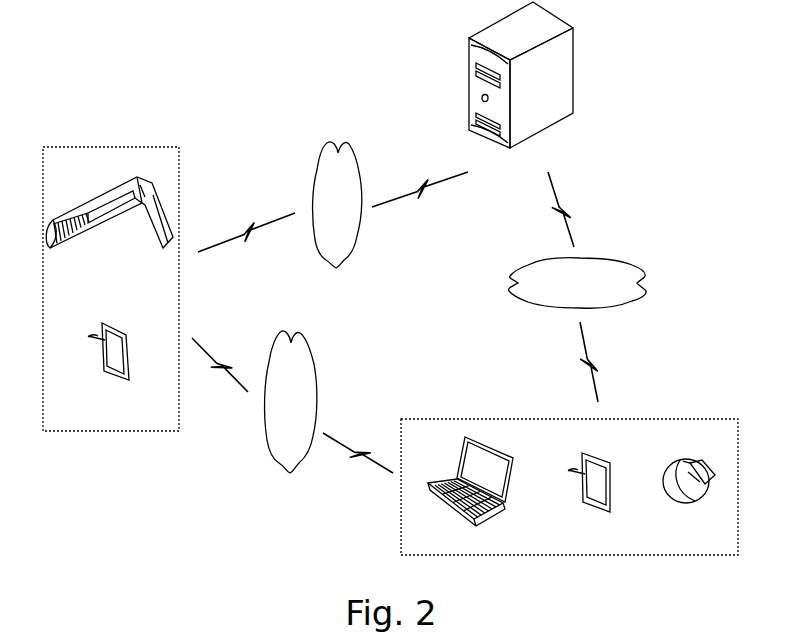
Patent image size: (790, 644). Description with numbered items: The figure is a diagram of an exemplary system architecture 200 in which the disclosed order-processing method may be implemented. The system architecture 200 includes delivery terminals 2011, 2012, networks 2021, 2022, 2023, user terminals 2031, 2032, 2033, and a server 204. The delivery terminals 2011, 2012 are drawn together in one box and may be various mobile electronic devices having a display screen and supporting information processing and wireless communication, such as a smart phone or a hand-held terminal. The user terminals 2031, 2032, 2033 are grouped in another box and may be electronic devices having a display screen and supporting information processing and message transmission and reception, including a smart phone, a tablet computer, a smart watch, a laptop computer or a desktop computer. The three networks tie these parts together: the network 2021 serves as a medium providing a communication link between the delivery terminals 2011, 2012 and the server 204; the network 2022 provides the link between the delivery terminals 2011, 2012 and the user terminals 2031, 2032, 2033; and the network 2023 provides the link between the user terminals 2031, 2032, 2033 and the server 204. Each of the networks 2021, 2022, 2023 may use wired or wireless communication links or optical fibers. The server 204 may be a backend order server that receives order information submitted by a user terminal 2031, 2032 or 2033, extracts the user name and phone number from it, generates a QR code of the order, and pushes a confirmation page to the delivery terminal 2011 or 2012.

The system architecture 200 is at (222, 52).
The server 204 is at (521, 91).
The delivery terminal 2011 is at (109, 228).
The delivery terminal 2012 is at (108, 363).
The network 2021 is at (333, 205).
The network 2022 is at (292, 402).
The network 2023 is at (577, 287).
The user terminal 2031 is at (470, 490).
The user terminal 2032 is at (591, 498).
The user terminal 2033 is at (689, 501).